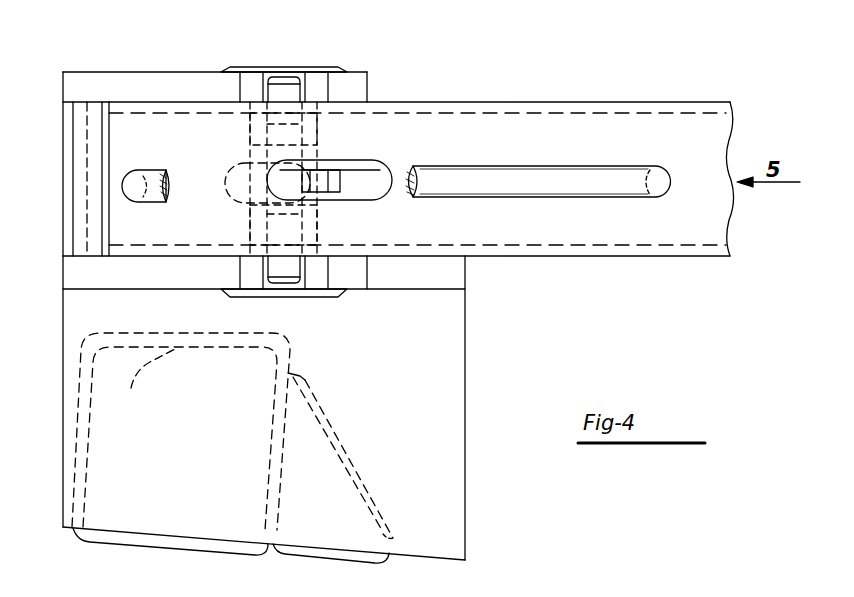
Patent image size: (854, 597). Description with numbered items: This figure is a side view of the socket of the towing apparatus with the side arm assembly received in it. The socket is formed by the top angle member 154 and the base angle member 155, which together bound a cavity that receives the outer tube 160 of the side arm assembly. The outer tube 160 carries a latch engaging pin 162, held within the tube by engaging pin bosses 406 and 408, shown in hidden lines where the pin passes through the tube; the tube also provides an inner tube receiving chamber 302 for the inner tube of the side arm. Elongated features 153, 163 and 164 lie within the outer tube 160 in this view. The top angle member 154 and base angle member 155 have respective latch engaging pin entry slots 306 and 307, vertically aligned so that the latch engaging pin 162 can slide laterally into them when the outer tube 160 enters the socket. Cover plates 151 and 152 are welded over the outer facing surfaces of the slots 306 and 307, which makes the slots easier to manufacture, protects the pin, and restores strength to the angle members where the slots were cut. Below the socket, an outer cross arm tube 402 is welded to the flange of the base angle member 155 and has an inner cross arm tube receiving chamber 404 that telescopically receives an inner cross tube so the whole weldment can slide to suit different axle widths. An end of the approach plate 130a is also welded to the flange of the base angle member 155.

The approach plate 130a is at (352, 455).
The cover plate 151 is at (281, 66).
The cover plate 152 is at (310, 297).
The pin 153 is at (313, 185).
The top angle member 154 is at (95, 80).
The base angle member 155 is at (465, 404).
The outer tube 160 is at (558, 102).
The latch engaging pin 162 is at (293, 90).
The rod 163 is at (575, 176).
The rod end 164 is at (404, 180).
The inner tube receiving chamber 302 is at (647, 118).
The latch engaging pin entry slot 306 is at (253, 80).
The latch engaging pin entry slot 307 is at (256, 290).
The outer cross arm tube 402 is at (181, 318).
The inner cross arm tube receiving chamber 404 is at (154, 376).
The engaging pin boss 406 is at (236, 134).
The engaging pin boss 408 is at (247, 208).